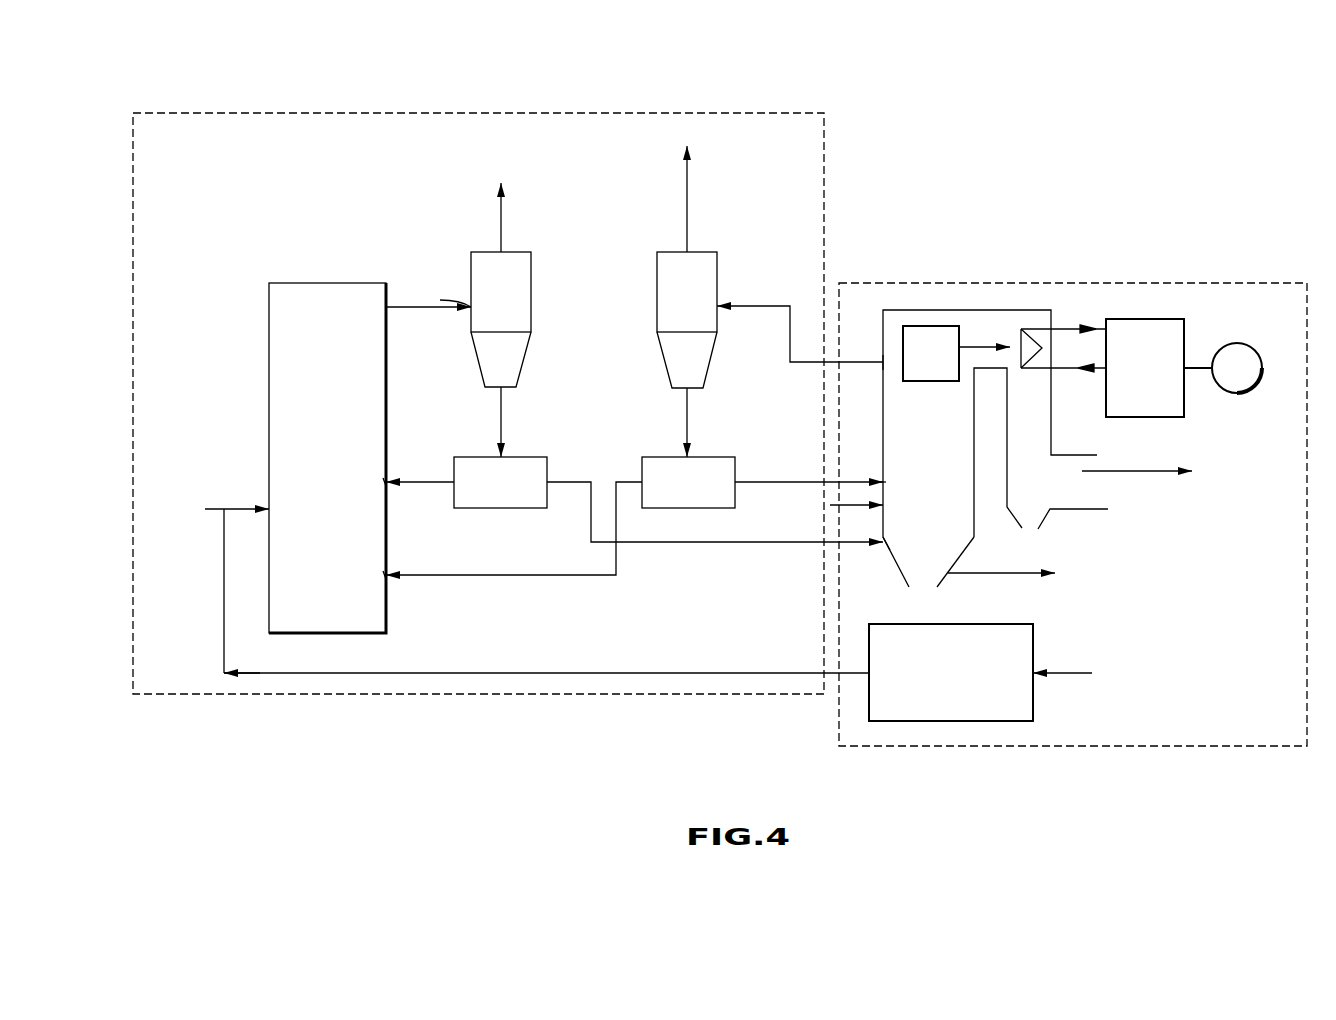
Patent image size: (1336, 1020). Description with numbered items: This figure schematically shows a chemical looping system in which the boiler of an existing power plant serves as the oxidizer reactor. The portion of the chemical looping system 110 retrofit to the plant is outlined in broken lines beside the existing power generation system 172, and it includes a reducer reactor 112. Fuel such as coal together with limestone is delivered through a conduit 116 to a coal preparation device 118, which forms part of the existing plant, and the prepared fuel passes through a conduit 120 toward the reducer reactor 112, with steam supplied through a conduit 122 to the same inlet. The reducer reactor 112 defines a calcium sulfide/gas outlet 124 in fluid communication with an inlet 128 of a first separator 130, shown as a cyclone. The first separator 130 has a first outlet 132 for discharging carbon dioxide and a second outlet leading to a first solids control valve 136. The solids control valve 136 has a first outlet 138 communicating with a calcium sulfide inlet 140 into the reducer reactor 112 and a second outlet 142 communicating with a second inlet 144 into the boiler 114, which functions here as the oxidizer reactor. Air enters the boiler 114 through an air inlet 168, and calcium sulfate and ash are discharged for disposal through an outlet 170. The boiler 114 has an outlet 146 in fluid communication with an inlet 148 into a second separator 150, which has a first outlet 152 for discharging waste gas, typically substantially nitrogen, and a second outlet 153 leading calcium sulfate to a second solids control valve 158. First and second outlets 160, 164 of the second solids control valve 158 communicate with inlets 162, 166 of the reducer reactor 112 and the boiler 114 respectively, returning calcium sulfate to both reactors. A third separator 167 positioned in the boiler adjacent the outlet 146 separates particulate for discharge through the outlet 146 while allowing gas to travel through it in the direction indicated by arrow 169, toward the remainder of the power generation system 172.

The portion of chemical looping system 110 is at (758, 112).
The existing power generation system 172 is at (1243, 280).
The reducer reactor 112 is at (351, 407).
The boiler/oxidizer reactor 114 is at (948, 428).
The conduit 116 is at (1075, 674).
The coal preparation device 118 is at (937, 676).
The conduit 120 is at (450, 673).
The steam conduit 122 is at (218, 509).
The CaS/gas outlet 124 is at (386, 305).
The inlet of first separator 128 is at (482, 300).
The first separator 130 is at (523, 310).
The first outlet of first separator 132 is at (501, 243).
The first solids control valve 136 is at (518, 495).
The first outlet of first solids control valve 138 is at (454, 470).
The CaS inlet 140 is at (386, 482).
The second outlet of first solids control valve 142 is at (549, 480).
The second inlet into boiler 144 is at (886, 546).
The outlet of boiler/oxidizer reactor 146 is at (883, 362).
The inlet into second separator 148 is at (717, 300).
The second separator 150 is at (702, 310).
The first outlet of second separator 152 is at (690, 245).
The second outlet of second separator 153 is at (690, 388).
The second solids control valve 158 is at (706, 495).
The first outlet of second solids control valve 160 is at (640, 483).
The inlet into reducer reactor 162 is at (386, 574).
The second outlet of second solids control valve 164 is at (736, 470).
The inlet into boiler/oxidizer reactor 166 is at (884, 482).
The third separator 167 is at (914, 360).
The air inlet 168 is at (884, 505).
The arrow 169 is at (962, 347).
The outlet 170 is at (962, 573).